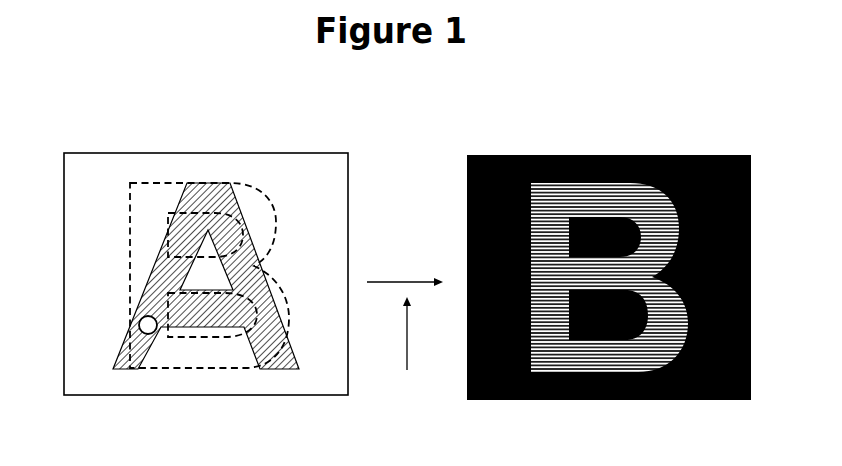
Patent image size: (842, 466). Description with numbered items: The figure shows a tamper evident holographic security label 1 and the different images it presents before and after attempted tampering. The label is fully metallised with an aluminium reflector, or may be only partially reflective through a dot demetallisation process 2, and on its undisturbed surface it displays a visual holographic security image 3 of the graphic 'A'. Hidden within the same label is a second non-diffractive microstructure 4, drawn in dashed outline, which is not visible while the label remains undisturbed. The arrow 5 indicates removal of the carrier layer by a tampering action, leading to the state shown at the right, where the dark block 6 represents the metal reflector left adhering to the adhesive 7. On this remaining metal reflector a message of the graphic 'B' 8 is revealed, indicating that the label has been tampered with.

The tamper evident holographic security label 1 is at (313, 147).
The dot demetallisation process 2 is at (95, 191).
The visual holographic security image 3 is at (279, 379).
The second non-diffractive microstructure 4 is at (121, 280).
The arrow 5 is at (405, 340).
The output image block 6 is at (709, 148).
The adhesive 7 is at (762, 285).
The message of graphic 'B' 8 is at (549, 355).